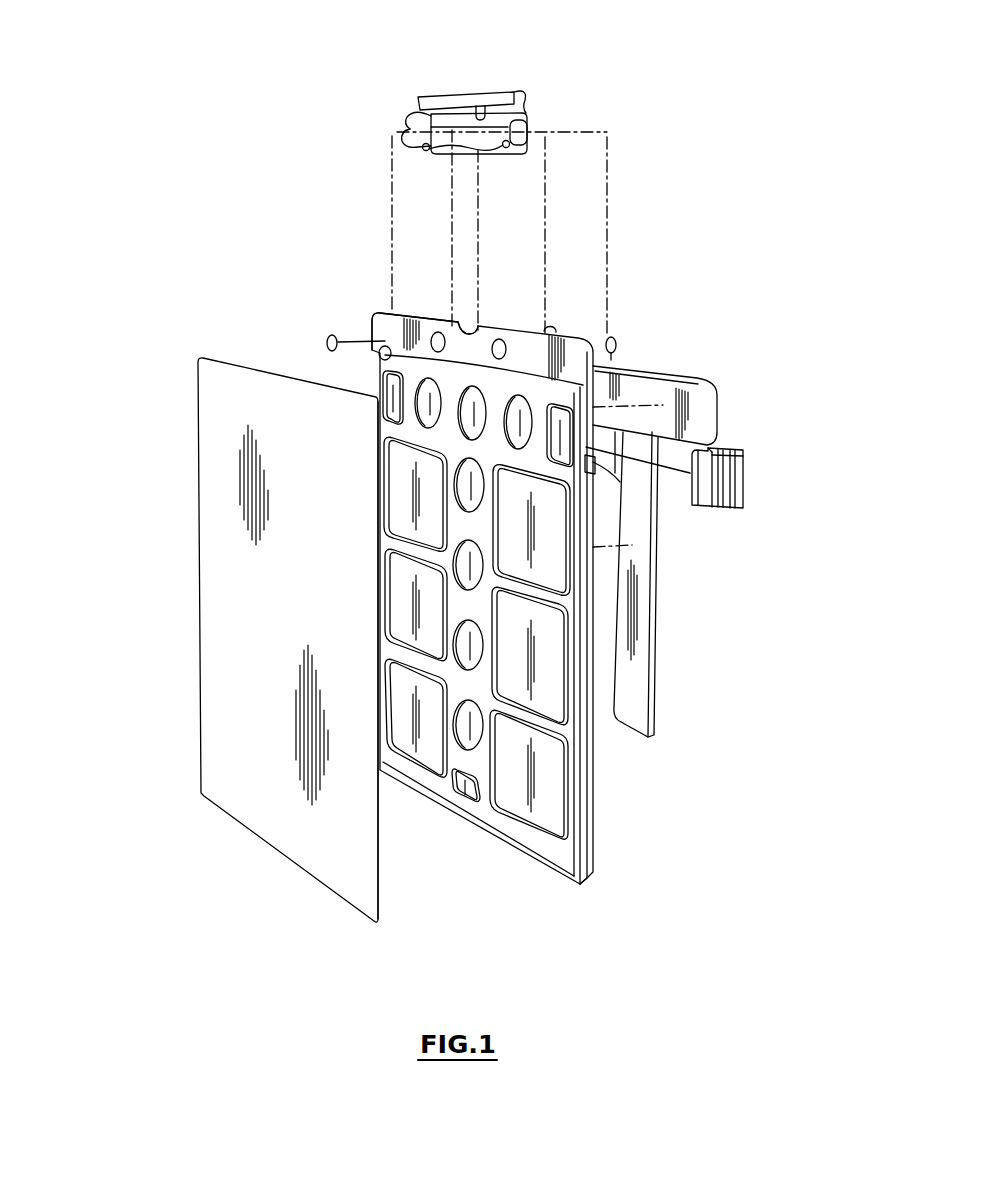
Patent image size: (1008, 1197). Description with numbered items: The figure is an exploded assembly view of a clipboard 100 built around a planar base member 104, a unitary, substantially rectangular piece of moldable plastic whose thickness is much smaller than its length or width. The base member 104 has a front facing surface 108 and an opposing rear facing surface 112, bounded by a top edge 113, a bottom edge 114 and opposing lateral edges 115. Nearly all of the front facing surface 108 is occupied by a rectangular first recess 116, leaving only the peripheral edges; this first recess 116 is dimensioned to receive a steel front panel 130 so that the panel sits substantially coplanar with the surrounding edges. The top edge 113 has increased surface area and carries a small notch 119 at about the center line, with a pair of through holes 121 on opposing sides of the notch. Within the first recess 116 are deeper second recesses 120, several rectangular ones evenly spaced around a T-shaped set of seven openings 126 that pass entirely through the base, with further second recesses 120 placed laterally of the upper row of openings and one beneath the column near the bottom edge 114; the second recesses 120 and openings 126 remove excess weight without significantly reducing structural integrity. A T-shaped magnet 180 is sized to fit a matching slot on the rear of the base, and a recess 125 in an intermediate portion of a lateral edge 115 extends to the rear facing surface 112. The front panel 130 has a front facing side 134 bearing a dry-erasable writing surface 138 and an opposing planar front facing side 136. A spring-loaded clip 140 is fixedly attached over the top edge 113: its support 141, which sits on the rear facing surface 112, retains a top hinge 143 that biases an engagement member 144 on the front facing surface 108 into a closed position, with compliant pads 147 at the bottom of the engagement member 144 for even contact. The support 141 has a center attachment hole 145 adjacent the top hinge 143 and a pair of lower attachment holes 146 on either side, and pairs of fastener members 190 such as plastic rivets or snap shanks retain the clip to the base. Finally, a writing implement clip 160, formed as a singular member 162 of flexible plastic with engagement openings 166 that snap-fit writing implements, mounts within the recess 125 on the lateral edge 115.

The clipboard 100 is at (86, 338).
The base member 104 is at (612, 870).
The front facing surface 108 is at (537, 850).
The rear facing surface 112 is at (575, 813).
The top edge 113 is at (382, 320).
The bottom edge 114 is at (483, 817).
The lateral edge 115 is at (585, 778).
The first recess 116 is at (408, 745).
The notch 119 is at (468, 326).
The second recess 120 is at (565, 420).
The hole 121 is at (440, 334).
The recess 125 is at (593, 463).
The opening 126 is at (517, 420).
The front panel 130 is at (263, 882).
The front facing side 134 is at (228, 725).
The opposing planar front facing side 136 is at (383, 893).
The dry-erasable writing surface 138 is at (240, 662).
The spring-loaded clip 140 is at (549, 72).
The support 141 is at (537, 121).
The top hinge 143 is at (505, 96).
The engagement member 144 is at (408, 116).
The center attachment hole 145 is at (477, 107).
The lower attachment hole 146 is at (405, 131).
The pad 147 is at (412, 146).
The writing implement clip 160 is at (777, 473).
The singular member 162 is at (745, 497).
The engagement opening 166 is at (730, 467).
The magnet 180 is at (731, 364).
The fastener member 190 is at (308, 324).